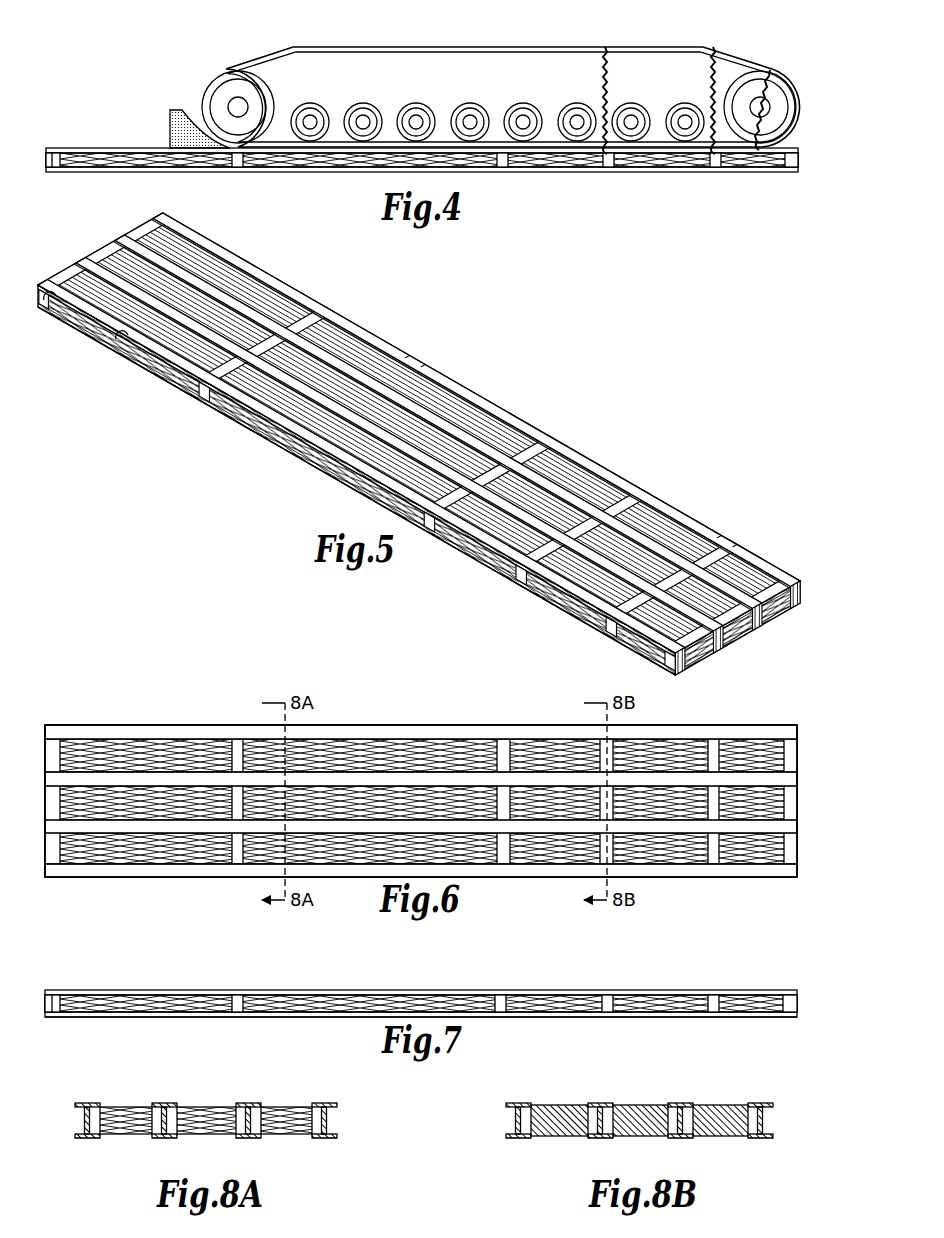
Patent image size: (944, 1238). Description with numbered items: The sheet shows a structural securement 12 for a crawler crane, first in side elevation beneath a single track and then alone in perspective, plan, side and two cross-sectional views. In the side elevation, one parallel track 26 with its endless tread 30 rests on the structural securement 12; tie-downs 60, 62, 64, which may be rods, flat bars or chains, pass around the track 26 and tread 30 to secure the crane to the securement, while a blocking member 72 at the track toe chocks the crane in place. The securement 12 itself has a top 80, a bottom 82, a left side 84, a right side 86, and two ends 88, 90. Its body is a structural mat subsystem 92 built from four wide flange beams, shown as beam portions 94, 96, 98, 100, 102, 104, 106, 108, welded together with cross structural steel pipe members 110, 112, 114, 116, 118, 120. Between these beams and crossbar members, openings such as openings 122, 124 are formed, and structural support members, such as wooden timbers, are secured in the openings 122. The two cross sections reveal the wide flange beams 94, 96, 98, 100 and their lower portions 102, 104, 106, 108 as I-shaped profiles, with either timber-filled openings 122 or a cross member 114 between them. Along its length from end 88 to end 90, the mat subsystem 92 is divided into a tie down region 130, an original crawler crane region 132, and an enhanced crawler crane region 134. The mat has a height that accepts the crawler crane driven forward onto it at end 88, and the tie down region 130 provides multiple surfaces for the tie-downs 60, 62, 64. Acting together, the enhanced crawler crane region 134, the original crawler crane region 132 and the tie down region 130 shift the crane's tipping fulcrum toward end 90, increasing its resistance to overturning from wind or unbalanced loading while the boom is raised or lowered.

In FIG. 4, the structural securement 12 is at (85, 146).
In FIG. 5, the structural securement 12 is at (512, 348).
In FIG. 6, the structural securement 12 is at (421, 806).
In FIG. 7, the structural securement 12 is at (421, 988).
In FIG. 8A, the structural securement 12 is at (197, 1103).
In FIG. 8B, the structural securement 12 is at (650, 1103).
In FIG. 4, the parallel track 26 is at (511, 47).
In FIG. 4, the endless tread 30 is at (466, 47).
In FIG. 4, the tie-down 60 is at (605, 47).
In FIG. 4, the tie-down 62 is at (713, 47).
In FIG. 4, the tie-down 64 is at (758, 72).
In FIG. 4, the blocking member 72 is at (170, 128).
In FIG. 5, the top 80 is at (466, 392).
In FIG. 6, the top 80 is at (165, 877).
In FIG. 5, the bottom 82 is at (525, 600).
In FIG. 5, the left side 84 is at (240, 428).
In FIG. 6, the left side 84 is at (343, 878).
In FIG. 6, the right side 86 is at (378, 730).
In FIG. 5, the end 88 is at (738, 655).
In FIG. 6, the end 88 is at (790, 795).
In FIG. 5, the end 90 is at (103, 250).
In FIG. 6, the end 90 is at (58, 795).
In FIG. 5, the structural mat subsystem 92 is at (300, 472).
In FIG. 6, the structural mat subsystem 92 is at (510, 748).
In FIG. 5, the beam portion 94 is at (565, 600).
In FIG. 6, the beam portion 94 is at (732, 878).
In FIG. 7, the beam portion 94 is at (645, 990).
In FIG. 8A, the beam portion 94 is at (88, 1103).
In FIG. 8B, the beam portion 94 is at (758, 1103).
In FIG. 5, the beam portion 96 is at (604, 570).
In FIG. 6, the beam portion 96 is at (418, 778).
In FIG. 8A, the beam portion 96 is at (165, 1103).
In FIG. 8B, the beam portion 96 is at (679, 1103).
In FIG. 5, the beam portion 98 is at (657, 547).
In FIG. 6, the beam portion 98 is at (447, 826).
In FIG. 8A, the beam portion 98 is at (250, 1103).
In FIG. 8B, the beam portion 98 is at (598, 1103).
In FIG. 5, the beam portion 100 is at (740, 550).
In FIG. 6, the beam portion 100 is at (78, 733).
In FIG. 8A, the beam portion 100 is at (328, 1103).
In FIG. 8B, the beam portion 100 is at (516, 1103).
In FIG. 5, the beam portion 102 is at (675, 680).
In FIG. 7, the beam portion 102 is at (640, 1017).
In FIG. 8A, the beam portion 102 is at (88, 1138).
In FIG. 8B, the beam portion 102 is at (760, 1138).
In FIG. 5, the beam portion 104 is at (715, 645).
In FIG. 8A, the beam portion 104 is at (164, 1138).
In FIG. 8B, the beam portion 104 is at (681, 1138).
In FIG. 5, the beam portion 106 is at (748, 628).
In FIG. 8A, the beam portion 106 is at (248, 1138).
In FIG. 8B, the beam portion 106 is at (600, 1138).
In FIG. 5, the beam portion 108 is at (793, 612).
In FIG. 8A, the beam portion 108 is at (325, 1138).
In FIG. 8B, the beam portion 108 is at (520, 1138).
In FIG. 5, the cross structural steel pipe member 110 is at (755, 599).
In FIG. 6, the cross structural steel pipe member 110 is at (780, 848).
In FIG. 5, the cross structural steel pipe member 112 is at (672, 581).
In FIG. 6, the cross structural steel pipe member 112 is at (705, 848).
In FIG. 5, the cross structural steel pipe member 114 is at (540, 538).
In FIG. 6, the cross structural steel pipe member 114 is at (592, 848).
In FIG. 8B, the cross structural steel pipe member 114 is at (560, 1108).
In FIG. 5, the cross structural steel pipe member 116 is at (445, 495).
In FIG. 6, the cross structural steel pipe member 116 is at (560, 848).
In FIG. 5, the cross structural steel pipe member 118 is at (222, 363).
In FIG. 6, the cross structural steel pipe member 118 is at (235, 848).
In FIG. 5, the cross structural steel pipe member 120 is at (68, 268).
In FIG. 6, the cross structural steel pipe member 120 is at (62, 848).
In FIG. 5, the opening 122 is at (290, 405).
In FIG. 6, the opening 122 is at (352, 810).
In FIG. 7, the opening 122 is at (537, 995).
In FIG. 8A, the opening 122 is at (126, 1110).
In FIG. 5, the opening 124 is at (140, 338).
In FIG. 4, the tie down region 130 is at (665, 172).
In FIG. 5, the tie down region 130 is at (727, 540).
In FIG. 4, the original crawler crane region 132 is at (228, 172).
In FIG. 5, the original crawler crane region 132 is at (420, 358).
In FIG. 4, the enhanced crawler crane region 134 is at (50, 148).
In FIG. 5, the enhanced crawler crane region 134 is at (52, 300).